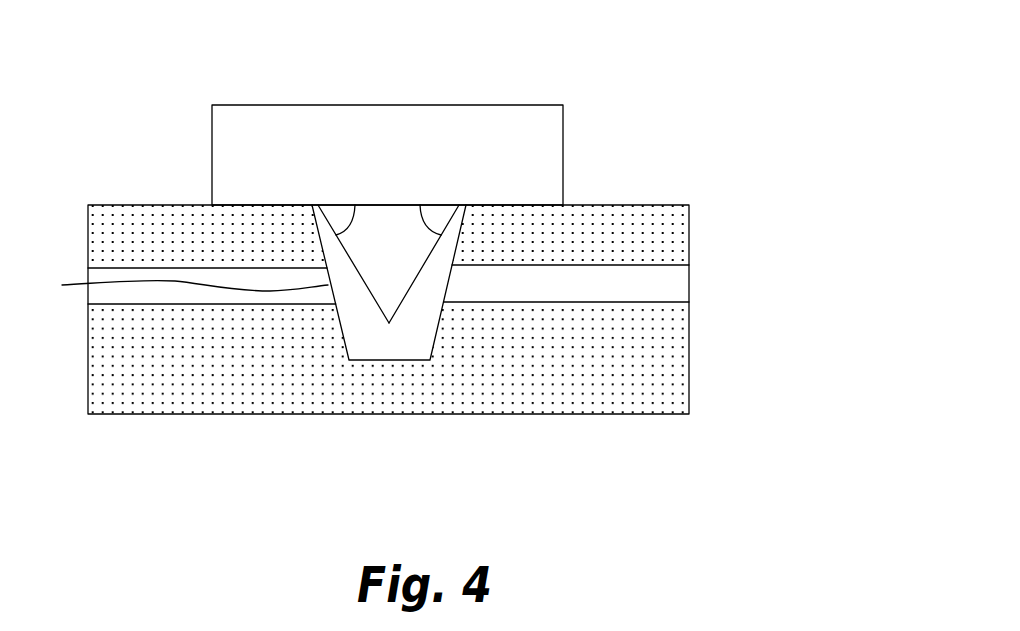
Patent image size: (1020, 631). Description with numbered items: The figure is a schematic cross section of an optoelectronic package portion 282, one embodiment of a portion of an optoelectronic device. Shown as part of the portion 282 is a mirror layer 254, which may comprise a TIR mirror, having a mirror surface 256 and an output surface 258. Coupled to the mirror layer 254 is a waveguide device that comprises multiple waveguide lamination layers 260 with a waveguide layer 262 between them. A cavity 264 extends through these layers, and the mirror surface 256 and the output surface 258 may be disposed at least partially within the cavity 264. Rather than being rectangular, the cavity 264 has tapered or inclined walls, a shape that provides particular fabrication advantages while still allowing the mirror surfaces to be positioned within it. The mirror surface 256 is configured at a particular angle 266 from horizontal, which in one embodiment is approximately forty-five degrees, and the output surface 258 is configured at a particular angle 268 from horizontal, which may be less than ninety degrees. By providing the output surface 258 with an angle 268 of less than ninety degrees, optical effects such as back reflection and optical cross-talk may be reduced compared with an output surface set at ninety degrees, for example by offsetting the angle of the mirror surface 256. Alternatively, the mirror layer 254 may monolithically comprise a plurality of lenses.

The optoelectronic package portion 282 is at (164, 73).
The mirror layer 254 is at (563, 150).
The waveguide lamination layers 260 is at (689, 233).
The waveguide layer 262 is at (689, 287).
The cavity 264 is at (171, 286).
The angle 266 is at (362, 220).
The mirror surface 256 is at (373, 318).
The output surface 258 is at (421, 324).
The angle 268 is at (419, 235).